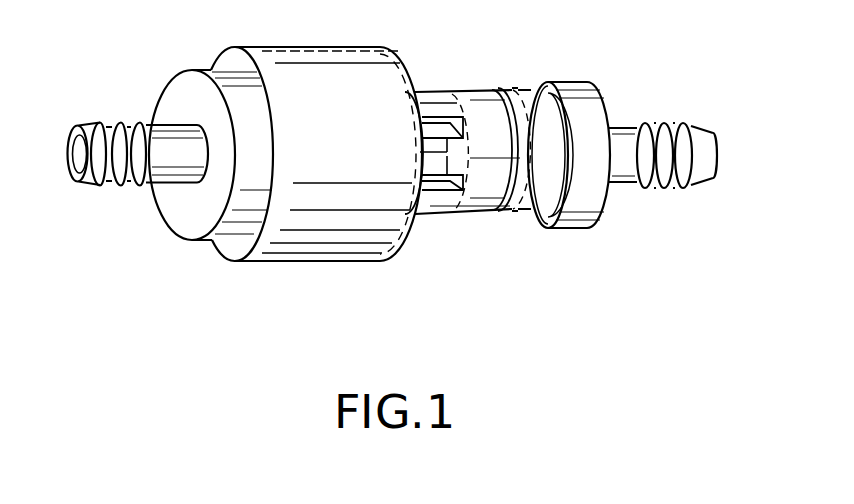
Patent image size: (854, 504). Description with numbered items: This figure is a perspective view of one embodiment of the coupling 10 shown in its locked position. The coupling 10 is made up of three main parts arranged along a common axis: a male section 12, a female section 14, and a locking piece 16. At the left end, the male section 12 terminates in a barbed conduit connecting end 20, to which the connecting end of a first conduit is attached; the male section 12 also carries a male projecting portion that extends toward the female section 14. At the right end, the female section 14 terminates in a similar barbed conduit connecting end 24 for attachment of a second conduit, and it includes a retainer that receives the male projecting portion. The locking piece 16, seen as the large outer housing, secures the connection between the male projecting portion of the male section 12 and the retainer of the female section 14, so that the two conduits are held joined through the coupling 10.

The coupling 10 is at (393, 180).
The male section 12 is at (219, 86).
The female section 14 is at (551, 82).
The locking piece 16 is at (410, 222).
The conduit connecting end 20 is at (135, 126).
The conduit connecting end 24 is at (659, 123).